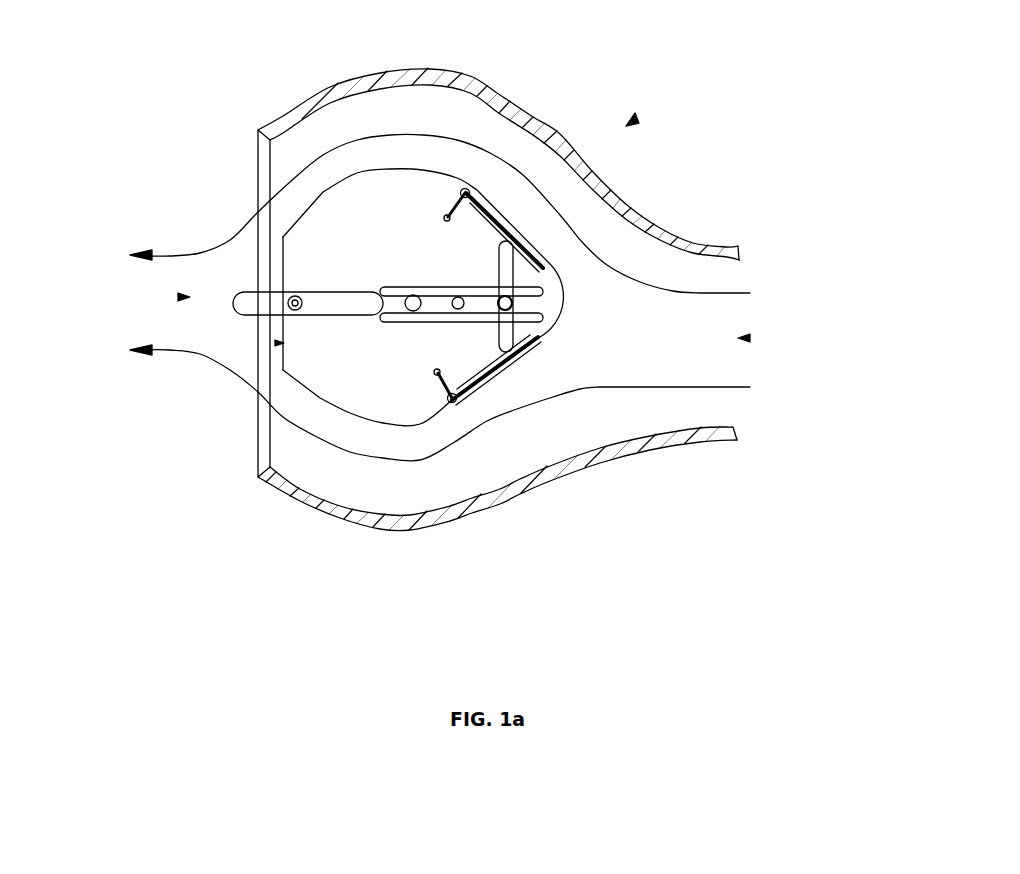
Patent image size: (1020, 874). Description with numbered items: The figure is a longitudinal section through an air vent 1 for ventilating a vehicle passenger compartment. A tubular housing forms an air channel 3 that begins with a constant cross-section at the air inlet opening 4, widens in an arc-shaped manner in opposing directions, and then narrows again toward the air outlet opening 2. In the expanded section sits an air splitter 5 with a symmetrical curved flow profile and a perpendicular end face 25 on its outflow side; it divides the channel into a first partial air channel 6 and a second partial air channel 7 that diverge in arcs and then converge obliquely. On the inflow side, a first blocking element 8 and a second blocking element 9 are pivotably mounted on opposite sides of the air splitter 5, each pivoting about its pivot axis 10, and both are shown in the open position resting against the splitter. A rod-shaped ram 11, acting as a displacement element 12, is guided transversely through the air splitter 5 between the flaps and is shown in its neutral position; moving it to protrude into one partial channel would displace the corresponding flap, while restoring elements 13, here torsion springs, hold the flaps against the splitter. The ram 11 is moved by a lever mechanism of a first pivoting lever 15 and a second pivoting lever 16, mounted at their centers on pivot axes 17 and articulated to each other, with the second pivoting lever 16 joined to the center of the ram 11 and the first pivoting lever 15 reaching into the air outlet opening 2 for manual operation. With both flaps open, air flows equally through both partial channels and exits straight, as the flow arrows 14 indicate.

The air vent 1 is at (638, 117).
The air outlet opening 2 is at (180, 297).
The air channel 3 is at (472, 506).
The air inlet opening 4 is at (748, 339).
The air splitter 5 is at (352, 400).
The first partial air channel 6 is at (387, 118).
The second partial air channel 7 is at (420, 487).
The first blocking element 8 is at (495, 215).
The second blocking element 9 is at (488, 378).
The pivot axis 10 is at (470, 190).
The ram 11 is at (583, 301).
The displacement element 12 is at (541, 338).
The restoring element 13 is at (447, 215).
The flow arrows 14 is at (205, 357).
The first pivoting lever 15 is at (340, 316).
The second pivoting lever 16 is at (440, 313).
The pivot axes 17 is at (455, 298).
The end face 25 is at (277, 343).